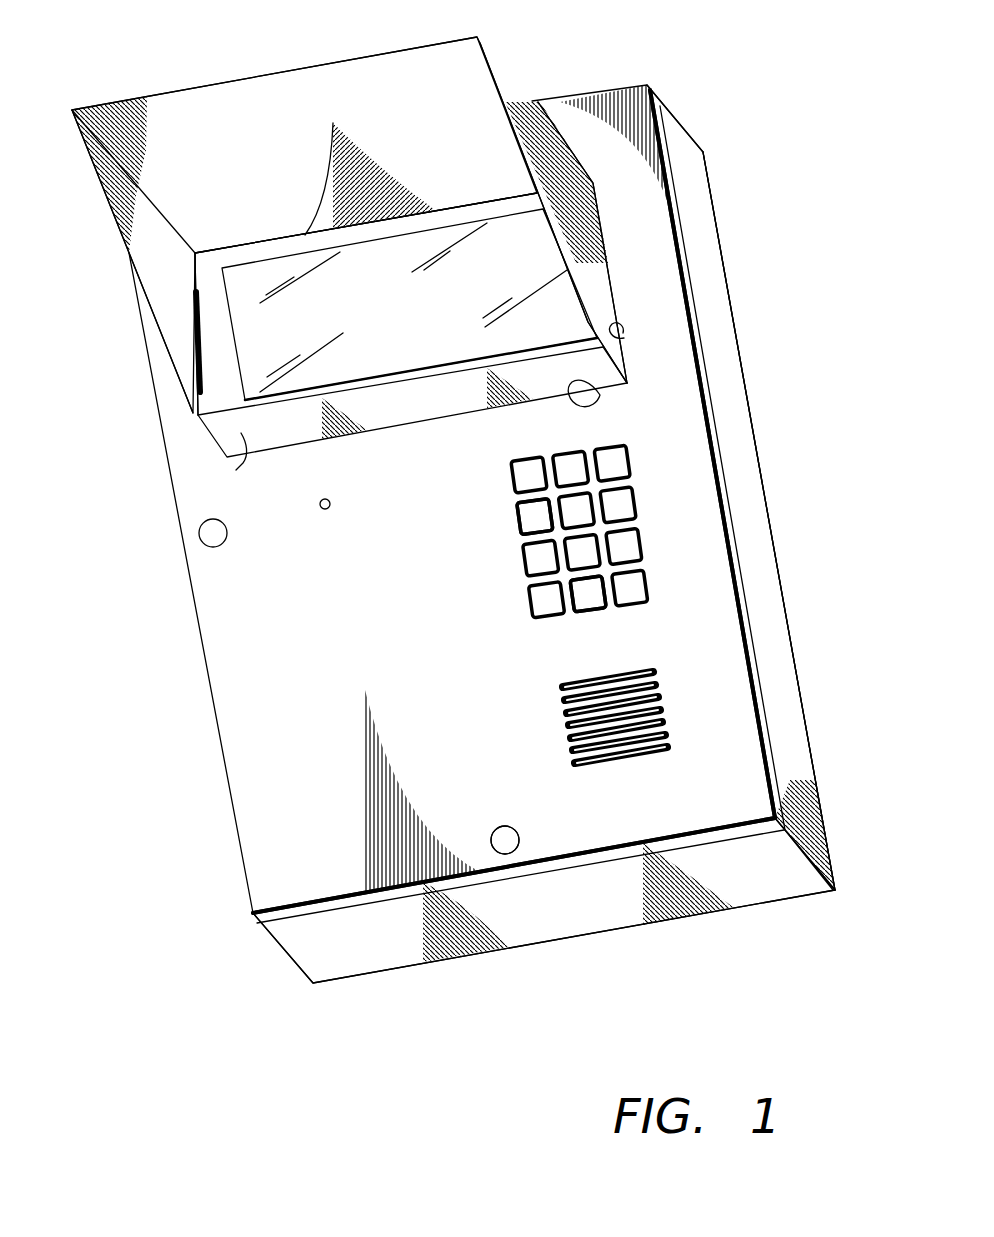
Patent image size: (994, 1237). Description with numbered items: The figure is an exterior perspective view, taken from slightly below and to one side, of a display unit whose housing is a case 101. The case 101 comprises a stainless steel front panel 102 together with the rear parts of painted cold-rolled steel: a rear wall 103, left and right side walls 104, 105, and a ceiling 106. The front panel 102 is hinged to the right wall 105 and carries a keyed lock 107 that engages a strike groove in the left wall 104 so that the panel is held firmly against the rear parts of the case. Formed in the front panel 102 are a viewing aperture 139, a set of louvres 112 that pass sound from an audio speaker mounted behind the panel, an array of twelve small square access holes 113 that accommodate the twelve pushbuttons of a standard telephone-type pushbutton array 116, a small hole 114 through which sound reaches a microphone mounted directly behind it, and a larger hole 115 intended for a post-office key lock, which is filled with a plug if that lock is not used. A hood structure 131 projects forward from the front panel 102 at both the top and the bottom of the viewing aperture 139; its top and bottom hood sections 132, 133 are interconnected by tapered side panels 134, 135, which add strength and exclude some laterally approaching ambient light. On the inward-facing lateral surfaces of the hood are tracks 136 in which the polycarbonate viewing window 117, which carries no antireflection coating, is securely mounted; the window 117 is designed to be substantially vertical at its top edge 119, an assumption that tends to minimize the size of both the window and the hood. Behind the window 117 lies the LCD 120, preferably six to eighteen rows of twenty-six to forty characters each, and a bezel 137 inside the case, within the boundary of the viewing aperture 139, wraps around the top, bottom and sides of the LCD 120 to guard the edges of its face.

The case 101 is at (745, 253).
The front panel 102 is at (282, 667).
The rear wall 103 is at (770, 523).
The left side wall 104 is at (285, 957).
The right side wall 105 is at (765, 591).
The ceiling 106 is at (683, 125).
The keyed lock 107 is at (215, 548).
The louvres 112 is at (647, 760).
The square access holes 113 is at (633, 483).
The small hole 114 is at (330, 508).
The larger hole 115 is at (519, 837).
The pushbutton array 116 is at (590, 617).
The viewing window 117 is at (207, 383).
The top edge of the window 119 is at (193, 253).
The LCD 120 is at (197, 417).
The hood structure 131 is at (125, 245).
The top hood section 132 is at (195, 110).
The bottom hood section 133 is at (247, 457).
The left tapered side panel 134 is at (158, 302).
The right tapered side panel 135 is at (490, 78).
The tracks 136 is at (197, 347).
The bezel 137 is at (215, 292).
The viewing aperture 139 is at (600, 395).